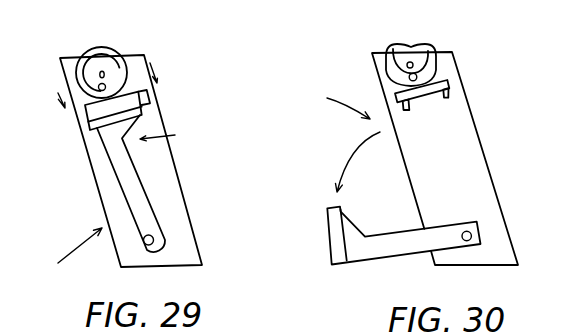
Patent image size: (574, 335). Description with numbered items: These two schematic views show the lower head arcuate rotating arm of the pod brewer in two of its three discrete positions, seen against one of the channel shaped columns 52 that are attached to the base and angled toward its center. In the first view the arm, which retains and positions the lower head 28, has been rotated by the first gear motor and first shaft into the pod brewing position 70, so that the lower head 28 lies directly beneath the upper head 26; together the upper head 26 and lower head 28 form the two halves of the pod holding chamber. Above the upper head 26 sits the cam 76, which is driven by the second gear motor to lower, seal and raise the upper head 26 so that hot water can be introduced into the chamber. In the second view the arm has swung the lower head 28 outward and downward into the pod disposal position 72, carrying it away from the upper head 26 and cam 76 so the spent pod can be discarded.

In FIG. 29, the upper head 26 is at (148, 95).
In FIG. 30, the upper head 26 is at (449, 80).
In FIG. 29, the lower head 28 is at (143, 113).
In FIG. 30, the lower head 28 is at (327, 235).
In FIG. 29, the channel shaped column 52 is at (98, 188).
In FIG. 30, the channel shaped column 52 is at (528, 133).
In FIG. 29, the pod brewing position 70 is at (57, 255).
In FIG. 30, the pod disposal position 72 is at (336, 138).
In FIG. 29, the cam 76 is at (110, 48).
In FIG. 30, the cam 76 is at (398, 43).